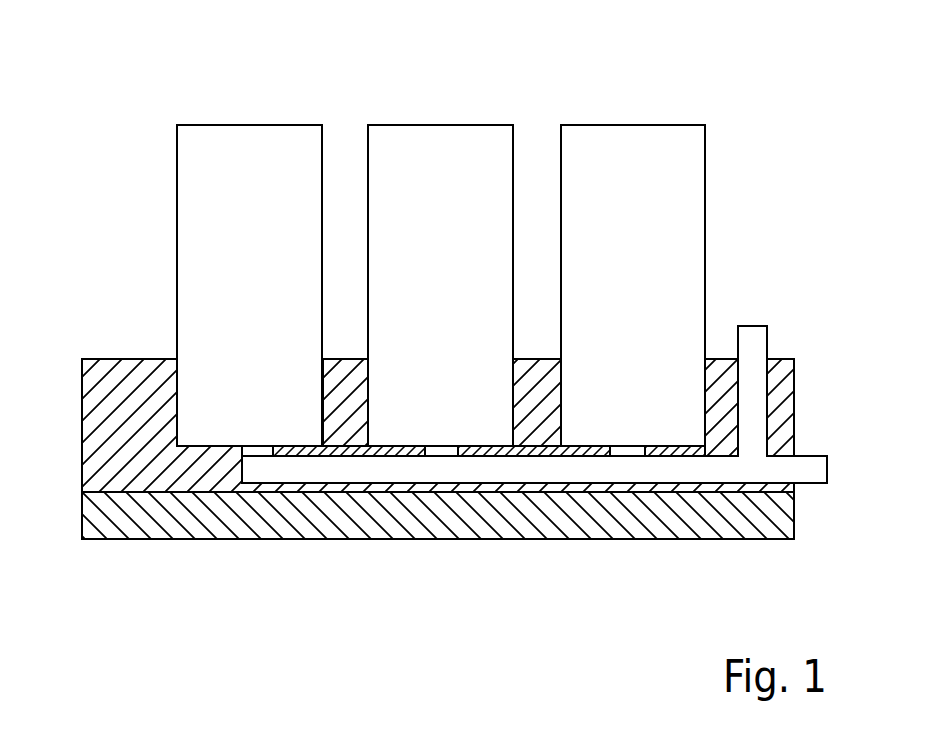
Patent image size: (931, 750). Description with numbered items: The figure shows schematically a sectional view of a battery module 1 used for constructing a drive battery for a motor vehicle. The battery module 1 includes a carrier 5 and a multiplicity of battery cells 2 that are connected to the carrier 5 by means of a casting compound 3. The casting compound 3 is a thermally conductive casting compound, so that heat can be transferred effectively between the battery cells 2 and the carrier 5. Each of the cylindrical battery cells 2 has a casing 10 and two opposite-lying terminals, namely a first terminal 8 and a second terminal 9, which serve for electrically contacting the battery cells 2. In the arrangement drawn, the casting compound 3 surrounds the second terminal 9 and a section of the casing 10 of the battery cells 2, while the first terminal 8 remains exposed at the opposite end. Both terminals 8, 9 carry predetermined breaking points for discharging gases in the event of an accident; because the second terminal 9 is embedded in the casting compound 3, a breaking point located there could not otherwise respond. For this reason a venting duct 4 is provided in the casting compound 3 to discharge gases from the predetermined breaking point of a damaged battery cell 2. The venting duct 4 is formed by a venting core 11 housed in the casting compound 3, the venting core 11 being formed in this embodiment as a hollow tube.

The battery module 1 is at (130, 119).
The battery cells 2 is at (593, 143).
The casting compound 3 is at (110, 360).
The venting duct 4 is at (603, 470).
The carrier 5 is at (473, 517).
The first terminal 8 is at (250, 125).
The second terminal 9 is at (258, 435).
The casing 10 is at (177, 224).
The venting core 11 is at (670, 472).